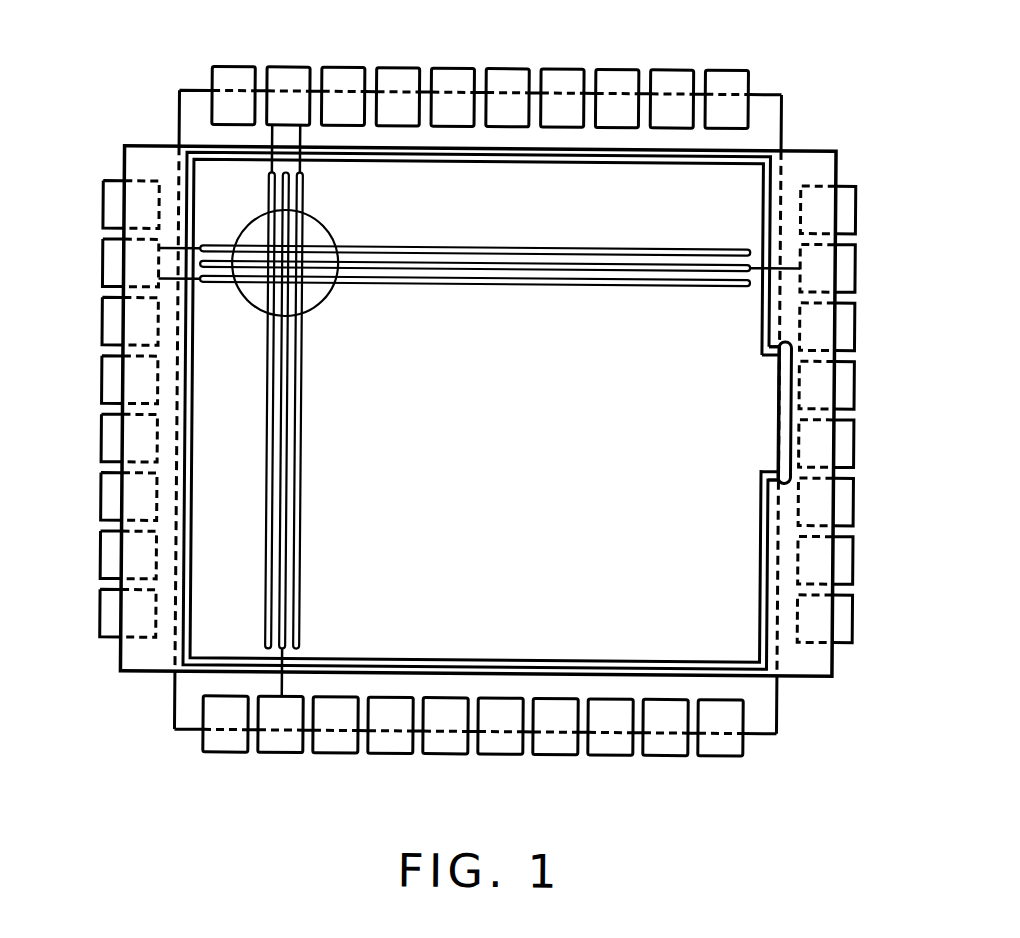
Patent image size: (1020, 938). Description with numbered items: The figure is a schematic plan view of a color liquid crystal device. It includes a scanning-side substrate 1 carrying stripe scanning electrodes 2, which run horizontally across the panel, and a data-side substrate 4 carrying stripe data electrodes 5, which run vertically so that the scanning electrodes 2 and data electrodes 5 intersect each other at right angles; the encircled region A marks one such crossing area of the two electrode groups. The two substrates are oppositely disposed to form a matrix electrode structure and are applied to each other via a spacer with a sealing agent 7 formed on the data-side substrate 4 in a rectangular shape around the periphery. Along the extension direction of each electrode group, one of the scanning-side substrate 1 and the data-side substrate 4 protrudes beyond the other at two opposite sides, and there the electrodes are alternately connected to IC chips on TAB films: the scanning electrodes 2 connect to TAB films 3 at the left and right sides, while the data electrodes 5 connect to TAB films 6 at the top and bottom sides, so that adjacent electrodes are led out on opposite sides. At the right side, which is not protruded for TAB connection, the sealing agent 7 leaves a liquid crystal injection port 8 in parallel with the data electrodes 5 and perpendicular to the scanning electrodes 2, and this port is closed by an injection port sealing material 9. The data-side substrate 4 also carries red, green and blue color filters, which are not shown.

The scanning-side substrate 1 is at (815, 160).
The scanning electrodes 2 is at (652, 249).
The TAB films 3 is at (849, 270).
The data-side substrate 4 is at (760, 103).
The data electrodes 5 is at (303, 483).
The TAB films 6 is at (669, 82).
The sealing agent 7 is at (761, 553).
The liquid crystal injection port 8 is at (767, 430).
The injection port sealing material 9 is at (783, 400).
The crossing region A is at (324, 303).